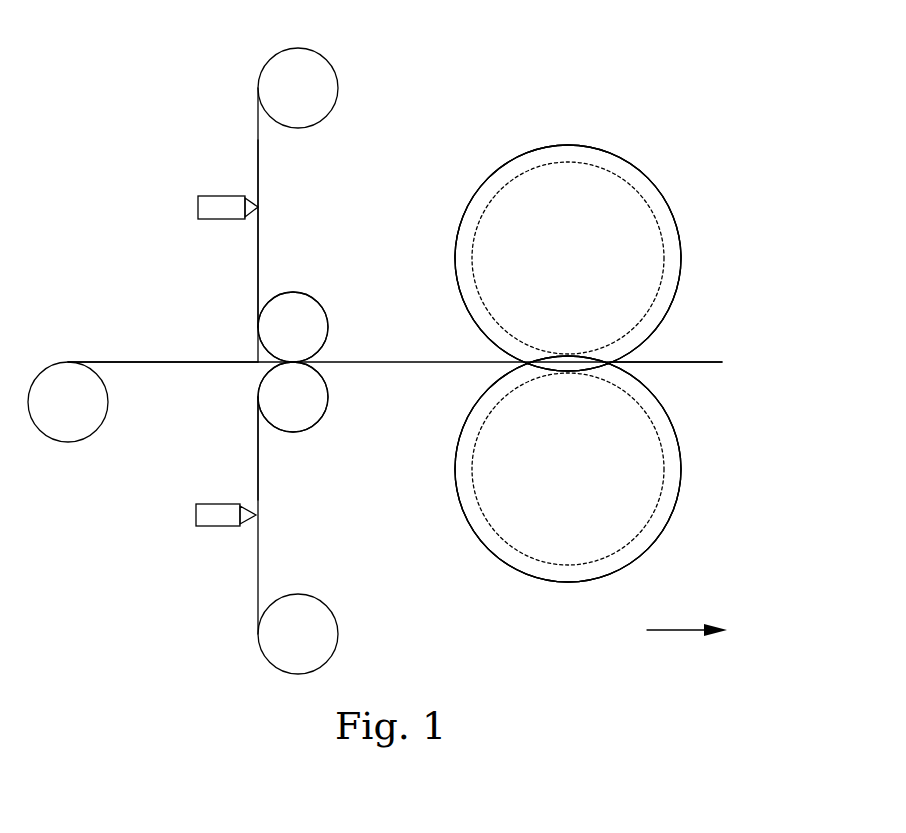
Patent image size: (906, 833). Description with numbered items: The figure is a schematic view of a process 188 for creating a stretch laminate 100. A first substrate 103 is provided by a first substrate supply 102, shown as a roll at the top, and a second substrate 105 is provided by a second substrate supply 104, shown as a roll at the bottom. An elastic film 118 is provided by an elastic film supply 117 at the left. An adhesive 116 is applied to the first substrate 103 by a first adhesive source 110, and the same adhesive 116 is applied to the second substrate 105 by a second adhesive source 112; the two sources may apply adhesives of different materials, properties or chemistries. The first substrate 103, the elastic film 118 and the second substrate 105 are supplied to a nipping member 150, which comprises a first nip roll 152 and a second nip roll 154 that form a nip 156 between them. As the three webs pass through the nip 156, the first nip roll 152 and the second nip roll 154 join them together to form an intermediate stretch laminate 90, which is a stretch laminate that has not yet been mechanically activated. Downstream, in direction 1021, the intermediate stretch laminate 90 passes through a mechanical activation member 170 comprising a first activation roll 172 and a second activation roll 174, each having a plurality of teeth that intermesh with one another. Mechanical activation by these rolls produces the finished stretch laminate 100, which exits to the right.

The intermediate stretch laminate 90 is at (345, 361).
The stretch laminate 100 is at (703, 362).
The first substrate supply 102 is at (322, 72).
The first substrate 103 is at (260, 153).
The second substrate supply 104 is at (322, 625).
The second substrate 105 is at (257, 568).
The first adhesive source 110 is at (220, 203).
The second adhesive source 112 is at (216, 520).
The adhesive 116 is at (257, 258).
The elastic film supply 117 is at (65, 422).
The elastic film 118 is at (135, 360).
The nipping member 150 is at (322, 280).
The first nip roll 152 is at (312, 318).
The second nip roll 154 is at (310, 397).
The nip 156 is at (242, 350).
The mechanical activation member 170 is at (688, 158).
The first activation roll 172 is at (670, 238).
The second activation roll 174 is at (665, 489).
The process 188 is at (480, 106).
The direction 1021 is at (670, 631).